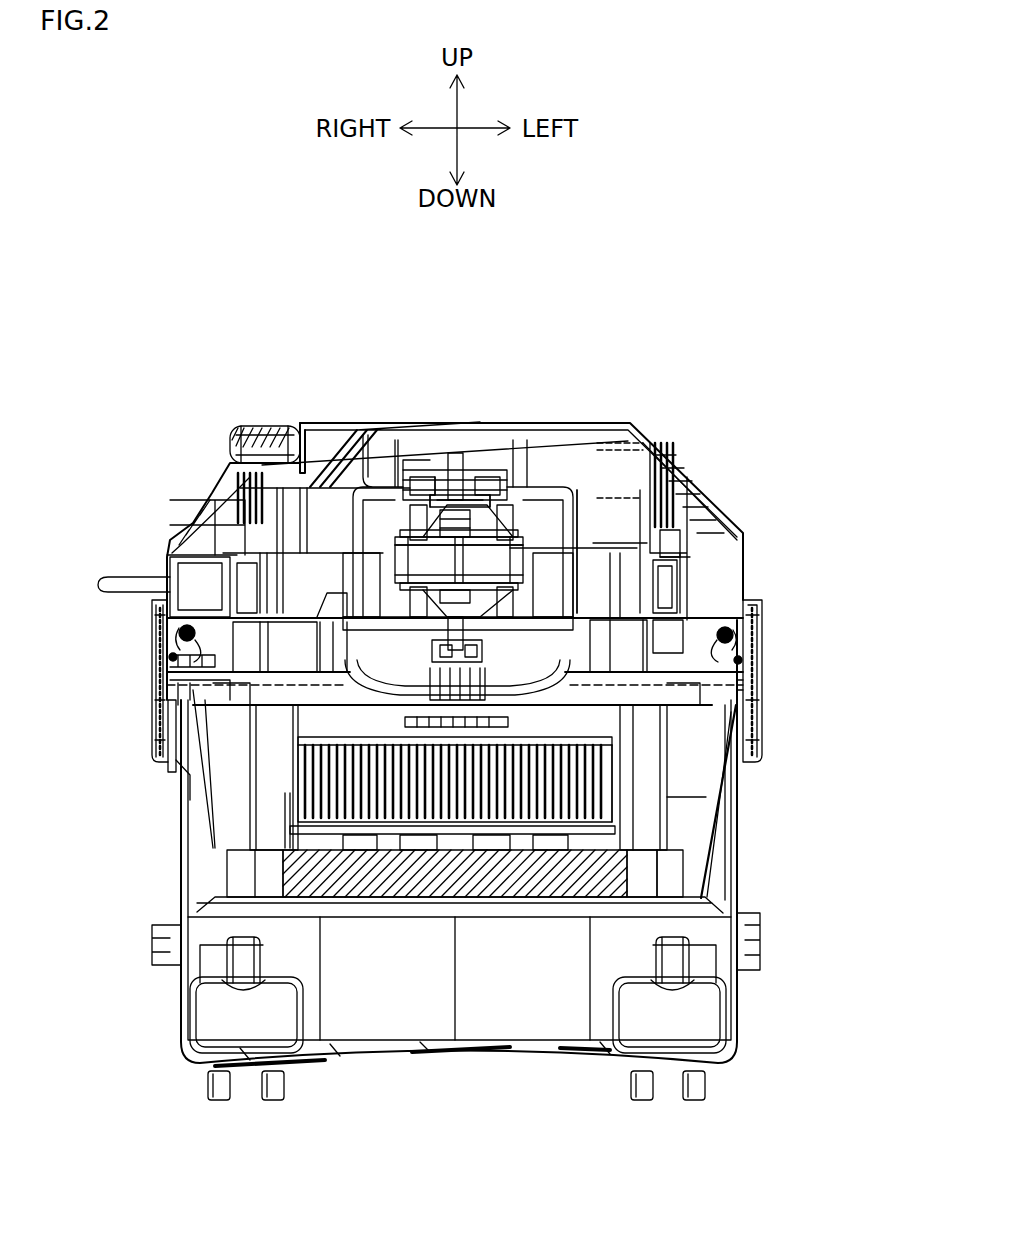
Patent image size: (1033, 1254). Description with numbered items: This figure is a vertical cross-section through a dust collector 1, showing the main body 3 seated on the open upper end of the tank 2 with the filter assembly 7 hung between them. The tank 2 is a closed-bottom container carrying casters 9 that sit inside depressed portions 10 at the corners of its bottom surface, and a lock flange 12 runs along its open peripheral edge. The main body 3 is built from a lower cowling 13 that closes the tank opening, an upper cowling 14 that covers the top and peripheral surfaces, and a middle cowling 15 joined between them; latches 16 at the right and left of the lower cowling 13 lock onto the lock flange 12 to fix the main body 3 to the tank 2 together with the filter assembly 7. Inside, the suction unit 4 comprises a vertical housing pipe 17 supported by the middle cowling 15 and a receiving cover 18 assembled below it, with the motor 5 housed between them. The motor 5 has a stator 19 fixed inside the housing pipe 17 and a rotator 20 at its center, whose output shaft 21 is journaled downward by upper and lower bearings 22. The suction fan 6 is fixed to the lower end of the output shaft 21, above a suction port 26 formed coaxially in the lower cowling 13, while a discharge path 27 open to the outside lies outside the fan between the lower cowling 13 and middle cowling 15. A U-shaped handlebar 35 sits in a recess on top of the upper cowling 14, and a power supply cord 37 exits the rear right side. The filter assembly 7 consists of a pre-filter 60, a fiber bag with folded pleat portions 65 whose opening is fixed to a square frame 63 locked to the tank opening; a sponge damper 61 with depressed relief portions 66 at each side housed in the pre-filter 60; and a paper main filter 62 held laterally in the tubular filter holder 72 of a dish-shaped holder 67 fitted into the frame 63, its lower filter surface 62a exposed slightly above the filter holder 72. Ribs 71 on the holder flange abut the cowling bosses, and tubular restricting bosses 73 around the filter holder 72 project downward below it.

The dust collector 1 is at (690, 356).
The tank 2 is at (762, 855).
The main body 3 is at (536, 396).
The suction unit 4 is at (488, 475).
The motor 5 is at (390, 485).
The suction fan 6 is at (580, 655).
The filter assembly 7 is at (725, 800).
The casters 9 is at (210, 1086).
The depressed portions 10 is at (205, 1010).
The lock flange 12 is at (170, 745).
The lower cowling 13 is at (765, 690).
The upper cowling 14 is at (700, 462).
The middle cowling 15 is at (690, 580).
The latches 16 is at (762, 660).
The housing pipe 17 is at (530, 535).
The receiving cover 18 is at (600, 665).
The stator 19 is at (492, 548).
The rotator 20 is at (408, 490).
The output shaft 21 is at (457, 468).
The bearings 22 is at (432, 500).
The suction port 26 is at (172, 658).
The discharge path 27 is at (330, 675).
The handlebar 35 is at (250, 425).
The power supply cord 37 is at (105, 583).
The pre-filter 60 is at (395, 905).
The damper 61 is at (575, 890).
The main filter 62 is at (300, 760).
The lower filter surface 62a is at (488, 860).
The frame 63 is at (160, 690).
The pleat portions 65 is at (718, 812).
The depressed relief portions 66 is at (250, 880).
The holder 67 is at (170, 770).
The ribs 71 is at (690, 740).
The filter holder 72 is at (605, 775).
The restricting bosses 73 is at (360, 845).